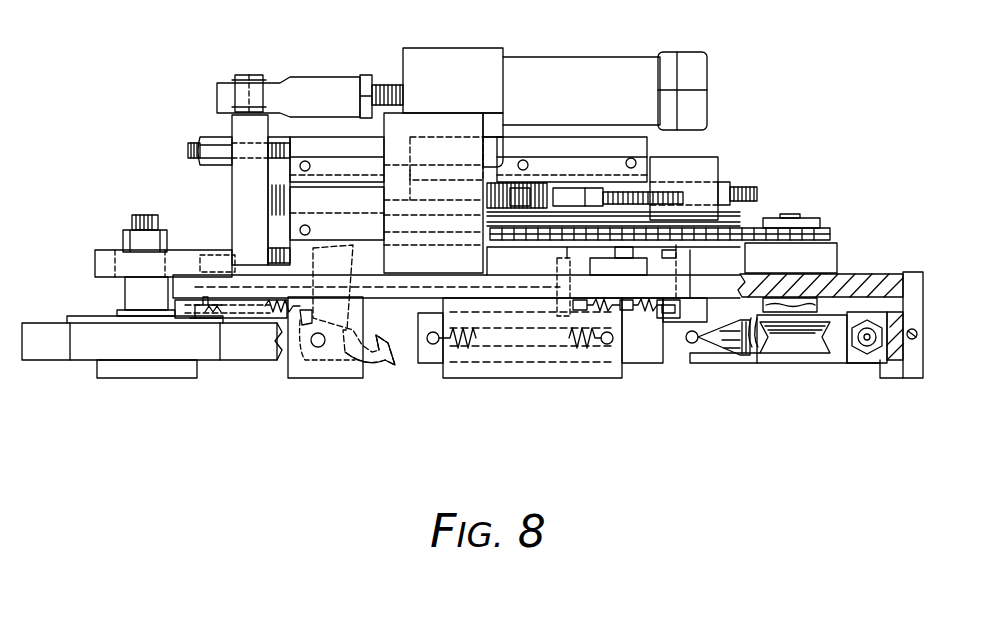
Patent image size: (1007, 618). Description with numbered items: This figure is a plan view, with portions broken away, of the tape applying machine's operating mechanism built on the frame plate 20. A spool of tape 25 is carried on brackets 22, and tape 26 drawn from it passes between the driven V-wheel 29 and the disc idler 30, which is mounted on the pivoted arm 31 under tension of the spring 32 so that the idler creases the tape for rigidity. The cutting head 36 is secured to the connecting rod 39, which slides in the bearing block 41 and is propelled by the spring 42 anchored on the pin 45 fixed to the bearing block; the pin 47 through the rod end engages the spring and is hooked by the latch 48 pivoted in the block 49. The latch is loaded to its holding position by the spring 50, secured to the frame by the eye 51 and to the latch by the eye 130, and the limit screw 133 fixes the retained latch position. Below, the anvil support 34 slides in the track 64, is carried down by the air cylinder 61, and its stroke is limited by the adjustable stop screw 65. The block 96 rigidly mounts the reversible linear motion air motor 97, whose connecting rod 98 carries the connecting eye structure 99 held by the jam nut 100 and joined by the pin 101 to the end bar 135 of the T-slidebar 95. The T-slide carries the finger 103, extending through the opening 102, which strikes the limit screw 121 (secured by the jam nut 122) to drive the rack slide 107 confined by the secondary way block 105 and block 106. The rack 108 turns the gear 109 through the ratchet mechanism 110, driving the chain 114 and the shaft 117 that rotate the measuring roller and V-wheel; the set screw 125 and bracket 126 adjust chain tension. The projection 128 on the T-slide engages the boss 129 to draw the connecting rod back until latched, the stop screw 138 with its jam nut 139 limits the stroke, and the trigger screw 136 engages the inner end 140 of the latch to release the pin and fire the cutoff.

The plate 20 is at (863, 277).
The brackets 22 is at (98, 268).
The spool of tape 25 is at (50, 352).
The tape 26 is at (752, 345).
The V-wheel 29 is at (798, 345).
The disc idler 30 is at (710, 347).
The pivoted arm 31 is at (670, 322).
The spring 32 is at (655, 318).
The anvil support 34 is at (840, 358).
The cutting head 36 is at (722, 362).
The connecting rod 39 is at (642, 358).
The bearing block 41 is at (550, 370).
The spring 42 is at (463, 350).
The pin 45 is at (607, 344).
The pin 47 is at (433, 343).
The latch 48 is at (387, 363).
The block 49 is at (323, 378).
The spring 50 is at (270, 305).
The eye 51 is at (195, 310).
The air cylinder 61 is at (867, 350).
The track 64 is at (915, 375).
The adjustable stop screw 65 is at (920, 335).
The T-slidebar 95 is at (267, 203).
The block 96 is at (472, 57).
The reversible linear motion air motor 97 is at (583, 63).
The connecting rod 98 is at (392, 85).
The connecting eye structure 99 is at (323, 85).
The jam nut 100 is at (368, 72).
The pin 101 is at (250, 73).
The opening 102 is at (673, 188).
The finger 103 is at (593, 185).
The secondary way block 105 is at (620, 160).
The block 106 is at (313, 220).
The rack slide 107 is at (718, 170).
The rack 108 is at (530, 185).
The gear 109 is at (497, 185).
The ratchet mechanism 110 is at (502, 147).
The chain 114 is at (827, 230).
The shaft 117 is at (810, 220).
The limit screw 121 is at (750, 193).
The jam nut 122 is at (730, 187).
The set screw 125 is at (623, 255).
The bracket 126 is at (593, 267).
The projection 128 is at (667, 253).
The boss 129 is at (557, 261).
The eye 130 is at (304, 318).
The limit screw 133 is at (212, 280).
The end bar 135 is at (235, 180).
The trigger screw 136 is at (280, 250).
The stop screw 138 is at (190, 142).
The jam nut 139 is at (220, 140).
The inner end 140 is at (353, 265).